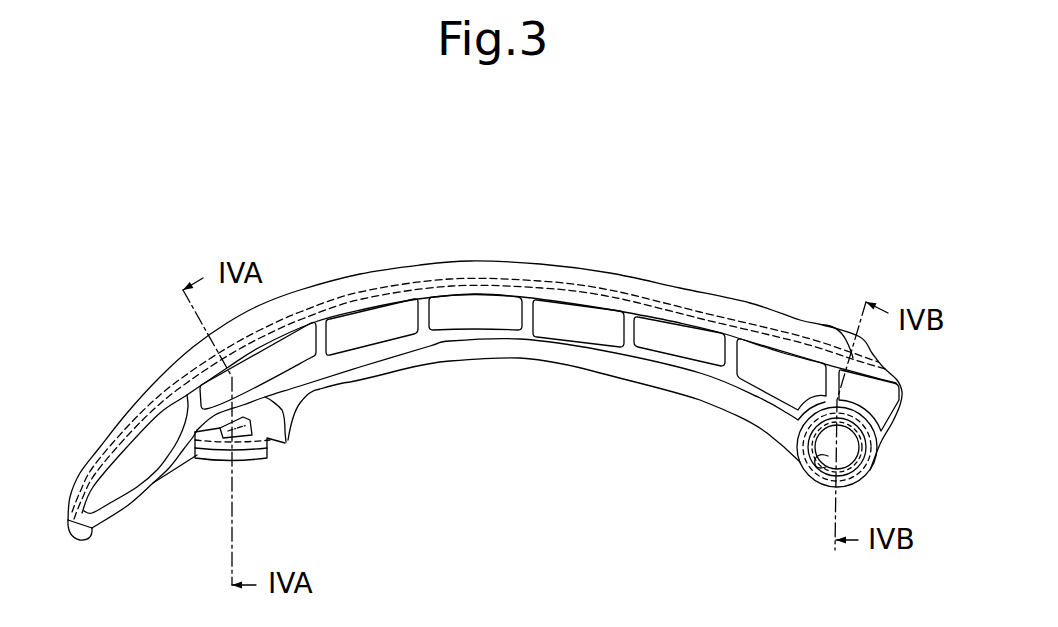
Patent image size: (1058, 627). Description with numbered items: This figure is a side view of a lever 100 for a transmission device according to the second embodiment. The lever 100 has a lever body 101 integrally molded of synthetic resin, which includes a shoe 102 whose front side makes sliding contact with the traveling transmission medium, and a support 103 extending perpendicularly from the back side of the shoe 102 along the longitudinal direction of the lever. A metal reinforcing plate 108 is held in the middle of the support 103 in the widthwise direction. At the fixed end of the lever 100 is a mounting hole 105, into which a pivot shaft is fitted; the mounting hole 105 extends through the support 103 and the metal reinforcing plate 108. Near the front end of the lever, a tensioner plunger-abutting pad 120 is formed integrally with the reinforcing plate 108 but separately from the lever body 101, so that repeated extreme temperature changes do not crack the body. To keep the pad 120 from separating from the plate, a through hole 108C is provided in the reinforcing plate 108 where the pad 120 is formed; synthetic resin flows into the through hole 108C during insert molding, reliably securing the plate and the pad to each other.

The lever 100 is at (544, 250).
The lever body 101 is at (528, 336).
The shoe 102 is at (632, 285).
The support 103 is at (697, 335).
The mounting hole 105 is at (818, 465).
The metal reinforcing plate 108 is at (355, 370).
The through hole 108C is at (253, 423).
The tensioner plunger-abutting pad 120 is at (212, 463).